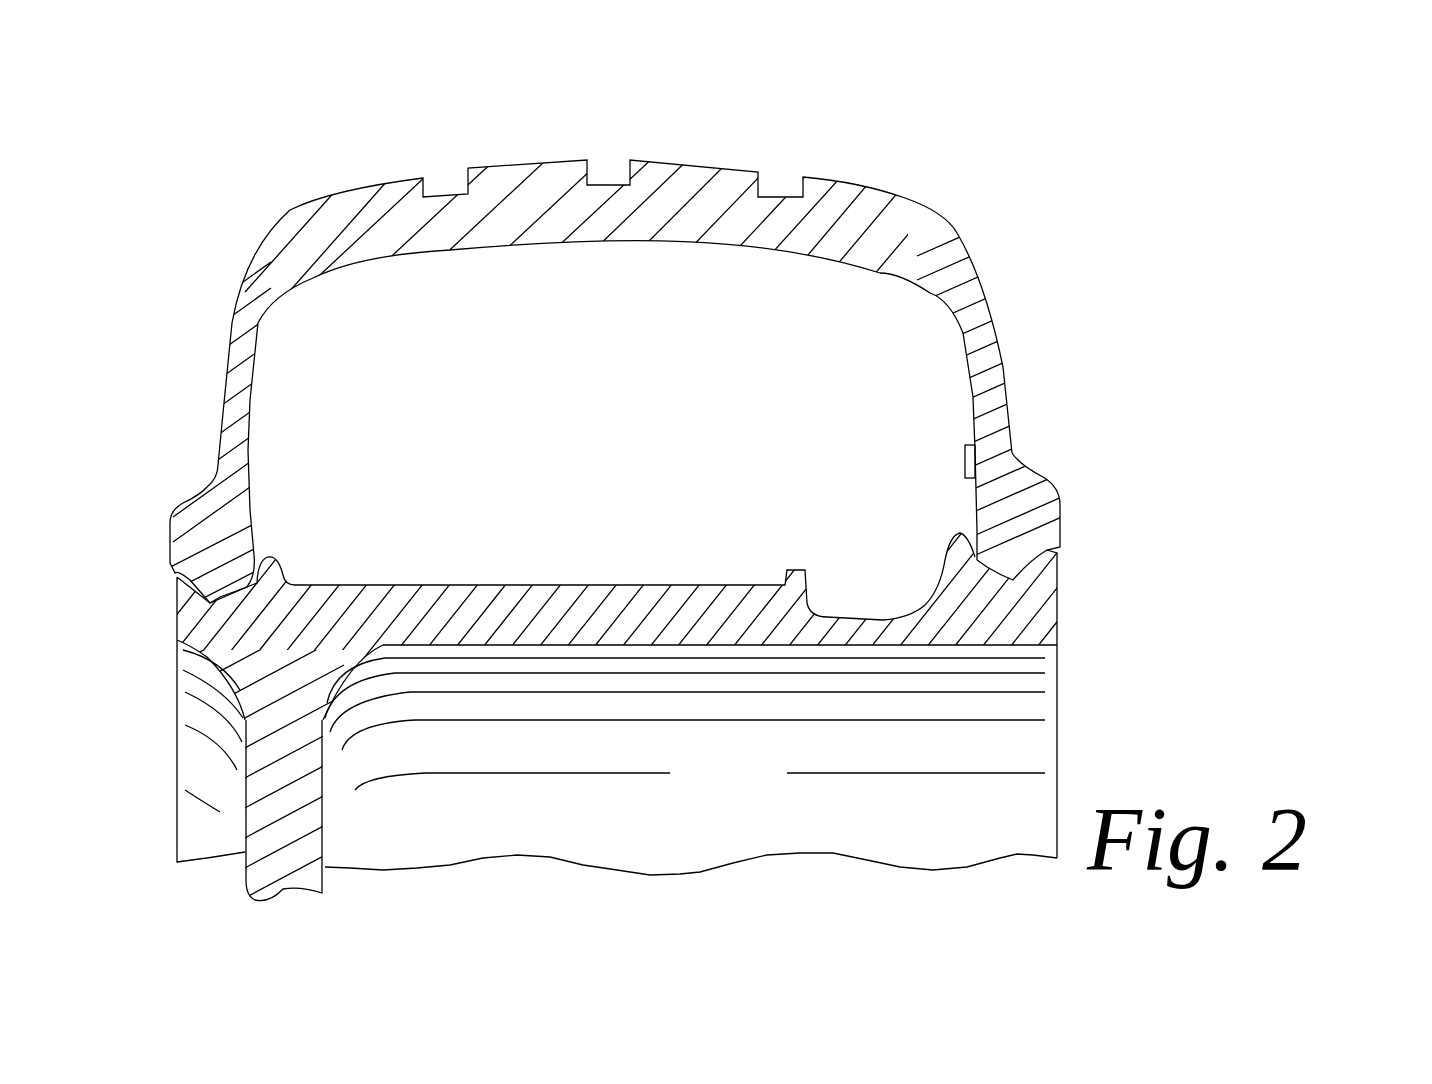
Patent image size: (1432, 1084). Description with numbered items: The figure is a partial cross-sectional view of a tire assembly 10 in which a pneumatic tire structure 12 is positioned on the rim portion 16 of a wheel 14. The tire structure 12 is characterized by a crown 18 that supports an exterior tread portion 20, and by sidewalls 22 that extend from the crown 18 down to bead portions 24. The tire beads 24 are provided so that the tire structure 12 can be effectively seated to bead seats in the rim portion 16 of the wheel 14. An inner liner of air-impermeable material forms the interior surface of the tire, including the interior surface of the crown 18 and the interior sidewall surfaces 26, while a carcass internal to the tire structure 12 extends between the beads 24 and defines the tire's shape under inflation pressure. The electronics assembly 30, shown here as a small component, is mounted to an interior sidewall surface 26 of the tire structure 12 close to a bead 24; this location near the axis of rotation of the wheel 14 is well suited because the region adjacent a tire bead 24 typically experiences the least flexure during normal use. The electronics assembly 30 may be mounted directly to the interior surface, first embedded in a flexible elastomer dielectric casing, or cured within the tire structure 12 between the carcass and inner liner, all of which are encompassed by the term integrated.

The tire assembly 10 is at (1275, 278).
The pneumatic tire structure 12 is at (968, 248).
The wheel 14 is at (280, 883).
The rim portion 16 is at (677, 630).
The crown 18 is at (740, 250).
The exterior tread portion 20 is at (698, 176).
The sidewalls 22 is at (227, 403).
The bead portions 24 is at (180, 547).
The interior sidewall surfaces 26 is at (970, 397).
The electronics assembly 30 is at (950, 475).